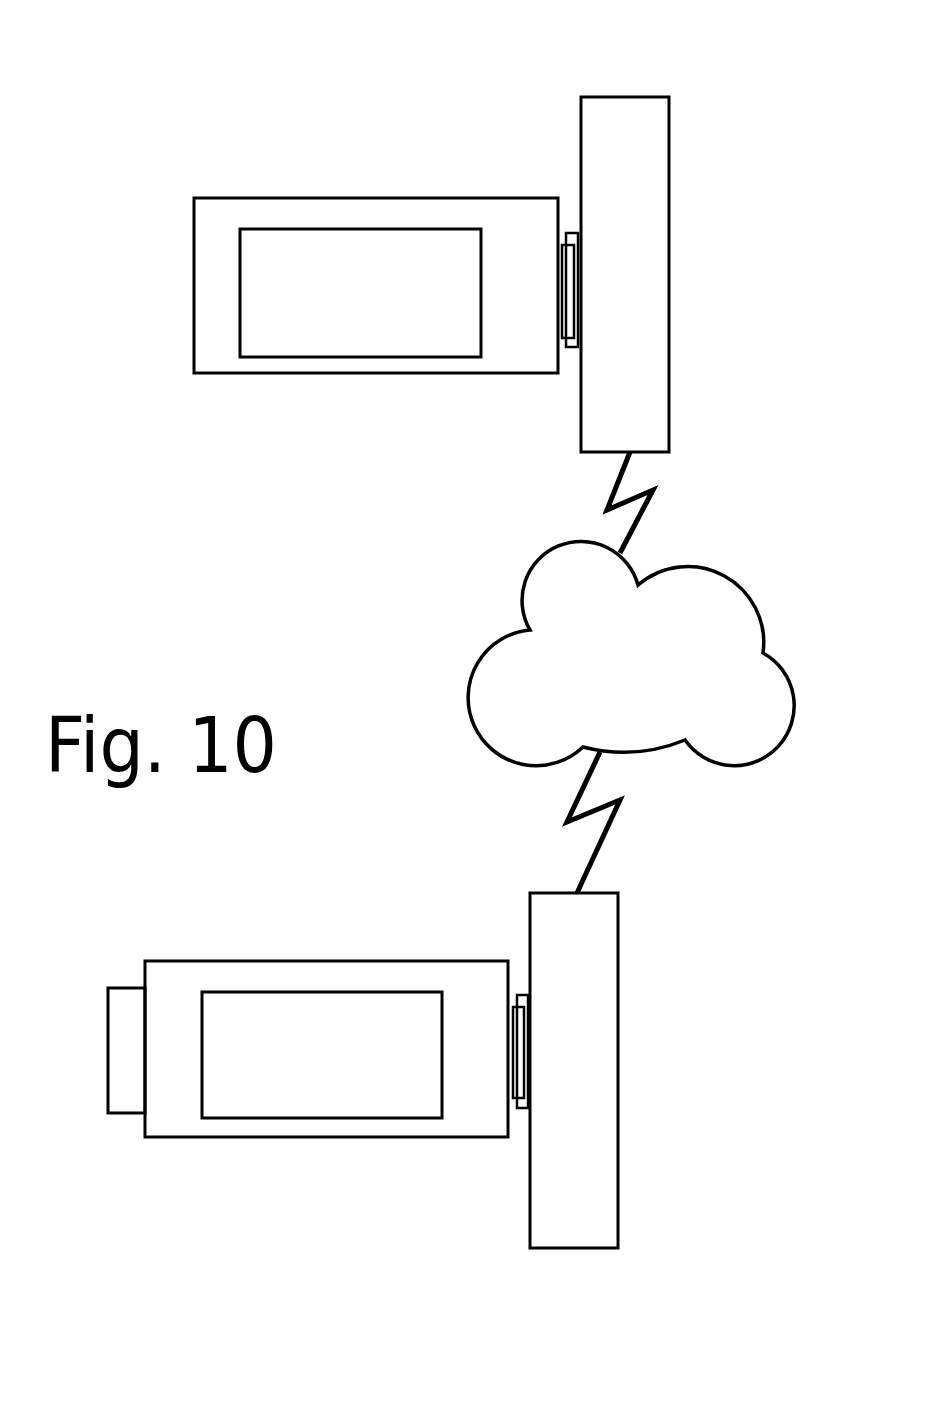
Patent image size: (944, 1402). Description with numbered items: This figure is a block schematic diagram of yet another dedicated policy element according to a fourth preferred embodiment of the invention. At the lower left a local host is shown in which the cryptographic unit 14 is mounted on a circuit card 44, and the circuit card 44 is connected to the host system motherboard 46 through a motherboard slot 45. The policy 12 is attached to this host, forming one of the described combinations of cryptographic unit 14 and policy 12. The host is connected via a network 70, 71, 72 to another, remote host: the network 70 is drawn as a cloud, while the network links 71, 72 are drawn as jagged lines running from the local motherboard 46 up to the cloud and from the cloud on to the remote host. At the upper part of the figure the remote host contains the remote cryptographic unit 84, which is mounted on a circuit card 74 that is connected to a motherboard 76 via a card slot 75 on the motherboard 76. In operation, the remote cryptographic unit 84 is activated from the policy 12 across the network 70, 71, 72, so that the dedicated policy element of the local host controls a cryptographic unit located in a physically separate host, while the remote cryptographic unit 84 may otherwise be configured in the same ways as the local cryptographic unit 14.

The policy 12 is at (128, 987).
The cryptographic unit 14 is at (268, 1012).
The circuit card 44 is at (460, 977).
The motherboard slot 45 is at (523, 1107).
The host system motherboard 46 is at (577, 1240).
The network 70 is at (763, 603).
The network 71 is at (650, 513).
The network 72 is at (607, 840).
The circuit card 74 is at (512, 213).
The card slot 75 is at (573, 233).
The motherboard 76 is at (643, 108).
The remote cryptographic unit 84 is at (315, 250).